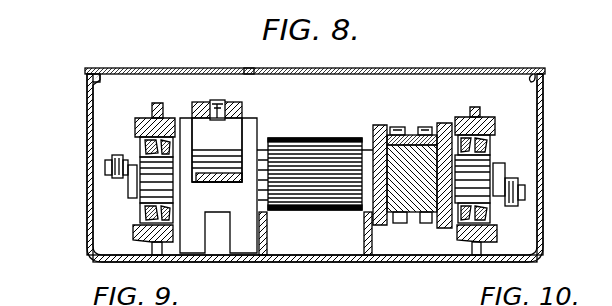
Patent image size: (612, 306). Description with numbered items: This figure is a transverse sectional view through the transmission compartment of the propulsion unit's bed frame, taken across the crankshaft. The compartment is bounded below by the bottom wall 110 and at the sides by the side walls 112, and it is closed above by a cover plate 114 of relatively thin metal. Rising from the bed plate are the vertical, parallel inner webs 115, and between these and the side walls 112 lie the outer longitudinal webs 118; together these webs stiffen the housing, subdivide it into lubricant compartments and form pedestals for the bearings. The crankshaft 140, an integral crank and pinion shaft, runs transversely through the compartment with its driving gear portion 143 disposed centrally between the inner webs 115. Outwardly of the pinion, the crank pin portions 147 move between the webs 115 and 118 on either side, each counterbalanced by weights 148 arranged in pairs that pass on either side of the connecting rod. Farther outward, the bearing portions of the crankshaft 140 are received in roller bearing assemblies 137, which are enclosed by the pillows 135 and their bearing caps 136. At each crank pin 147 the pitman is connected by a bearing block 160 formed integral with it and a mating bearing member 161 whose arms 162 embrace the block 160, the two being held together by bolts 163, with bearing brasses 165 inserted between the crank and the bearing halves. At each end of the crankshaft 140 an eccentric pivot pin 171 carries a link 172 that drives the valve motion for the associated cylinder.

The bottom wall 110 is at (321, 261).
The side walls 112 is at (90, 153).
The cover plate 114 is at (415, 57).
The inner webs 115 is at (260, 260).
The outer longitudinal webs 118 is at (158, 255).
The pillows 135 is at (133, 237).
The bearing caps 136 is at (145, 118).
The roller bearing assemblies 137 is at (140, 145).
The crankshaft 140 is at (145, 205).
The driving gear portion 143 is at (322, 142).
The crank pin portions 147 is at (267, 13).
The weights 148 is at (237, 215).
The bearing block 160 is at (412, 212).
The mating bearing member 161 is at (208, 118).
The arms 162 is at (374, 126).
The bolts 163 is at (398, 127).
The bearing brasses 165 is at (230, 172).
The pivot pin 171 is at (105, 168).
The link 172 is at (118, 182).